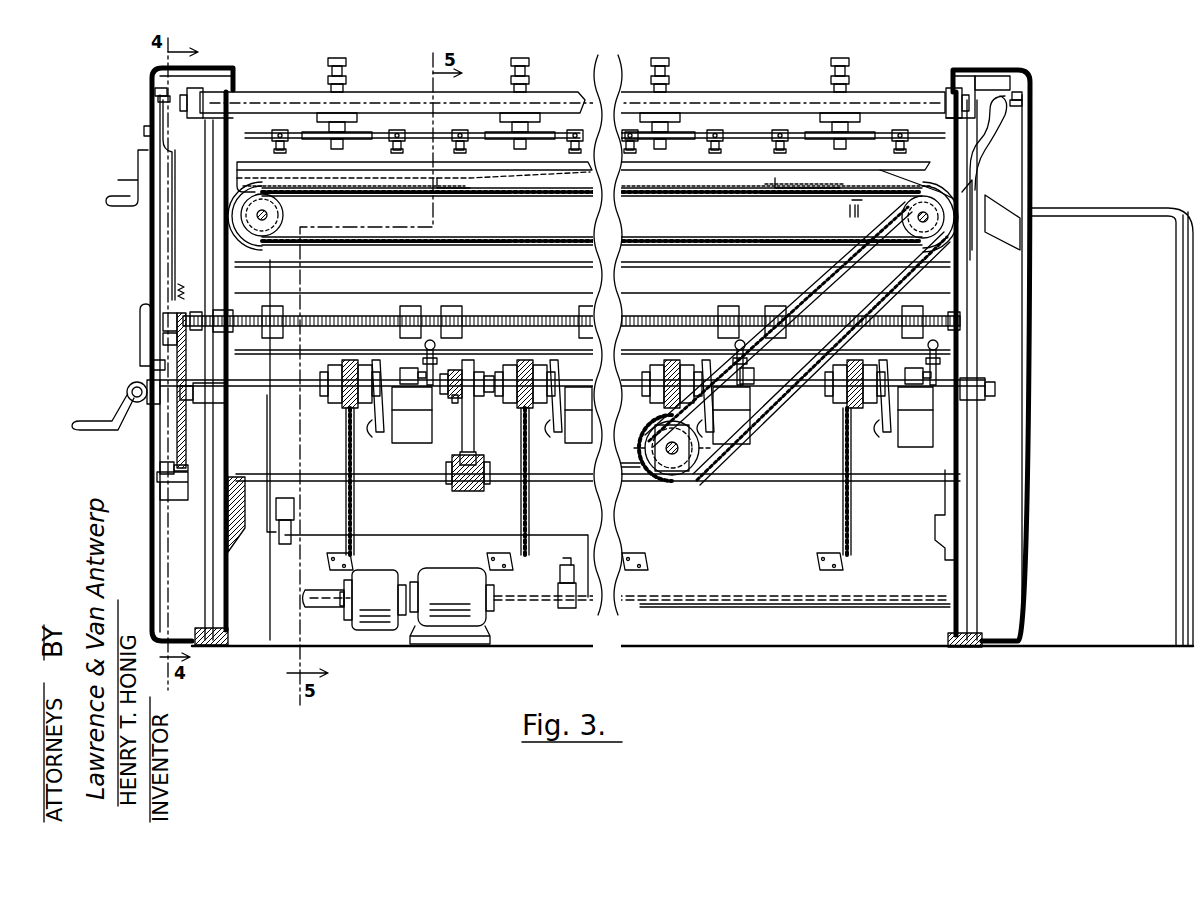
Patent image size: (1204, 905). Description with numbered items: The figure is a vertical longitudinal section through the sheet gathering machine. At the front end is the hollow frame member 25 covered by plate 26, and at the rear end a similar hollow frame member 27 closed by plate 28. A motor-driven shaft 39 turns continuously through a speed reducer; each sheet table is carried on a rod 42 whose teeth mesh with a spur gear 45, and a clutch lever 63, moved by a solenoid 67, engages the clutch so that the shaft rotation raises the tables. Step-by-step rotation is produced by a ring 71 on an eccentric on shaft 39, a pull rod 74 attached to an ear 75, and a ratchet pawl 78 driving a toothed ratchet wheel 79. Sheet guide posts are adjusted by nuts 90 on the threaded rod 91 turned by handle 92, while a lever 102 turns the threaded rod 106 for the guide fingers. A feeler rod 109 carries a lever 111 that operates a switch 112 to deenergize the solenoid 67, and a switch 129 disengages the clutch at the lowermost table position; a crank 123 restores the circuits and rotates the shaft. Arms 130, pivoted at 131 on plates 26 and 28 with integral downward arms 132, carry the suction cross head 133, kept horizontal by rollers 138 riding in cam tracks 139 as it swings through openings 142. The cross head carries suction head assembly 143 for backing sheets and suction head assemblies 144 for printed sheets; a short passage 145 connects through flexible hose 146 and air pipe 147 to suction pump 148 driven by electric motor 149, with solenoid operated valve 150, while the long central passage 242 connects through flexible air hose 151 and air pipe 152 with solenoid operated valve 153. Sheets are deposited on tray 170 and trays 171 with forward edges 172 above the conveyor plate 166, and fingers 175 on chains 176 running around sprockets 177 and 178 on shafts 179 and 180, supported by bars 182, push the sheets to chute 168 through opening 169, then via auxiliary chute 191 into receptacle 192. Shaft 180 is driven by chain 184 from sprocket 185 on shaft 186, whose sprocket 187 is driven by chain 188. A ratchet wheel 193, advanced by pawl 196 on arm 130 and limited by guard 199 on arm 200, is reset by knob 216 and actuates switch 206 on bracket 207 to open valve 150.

The hollow frame member 25 is at (152, 262).
The plate 26 is at (228, 602).
The hollow frame member 27 is at (985, 76).
The plate 28 is at (953, 571).
The shaft 39 is at (410, 482).
The rod 42 is at (352, 502).
The spur gear 45 is at (345, 362).
The clutch lever 63 is at (375, 405).
The solenoid 67 is at (410, 440).
The ring 71 is at (468, 492).
The pull rod 74 is at (468, 410).
The ear 75 is at (478, 368).
The ratchet pawl 78 is at (455, 368).
The toothed ratchet wheel 79 is at (452, 400).
The nut 90 is at (275, 308).
The rod 91 is at (335, 312).
The handle 92 is at (141, 352).
The lever 102 is at (120, 200).
The rod 106 is at (152, 128).
The rod 109 is at (993, 370).
The lever 111 is at (755, 368).
The switch 112 is at (407, 368).
The crank 123 is at (108, 415).
The switch 129 is at (495, 557).
The arm 130 is at (210, 235).
The pivot 131 is at (232, 397).
The arm 132 is at (207, 446).
The suction cross head 133 is at (478, 96).
The roller 138 is at (160, 98).
The cam track 139 is at (158, 90).
The opening 142 is at (215, 88).
The suction head assembly 143 is at (347, 100).
The suction head assembly 144 is at (528, 118).
The short passage 145 is at (287, 96).
The flexible hose 146 is at (170, 210).
The air pipe 147 is at (272, 432).
The suction pump 148 is at (372, 632).
The electric motor 149 is at (440, 615).
The solenoid operated valve 150 is at (283, 545).
The flexible air hose 151 is at (995, 155).
The air pipe 152 is at (720, 600).
The solenoid operated valve 153 is at (560, 578).
The conveyor plate 166 is at (365, 180).
The chute 168 is at (942, 185).
The opening 169 is at (958, 195).
The tray 170 is at (300, 178).
The tray 171 is at (505, 182).
The forward edge 172 is at (268, 176).
The finger 175 is at (233, 196).
The chain 176 is at (650, 240).
The sprocket 177 is at (295, 238).
The sprocket 178 is at (918, 218).
The shaft 179 is at (282, 215).
The shaft 180 is at (890, 220).
The bar 182 is at (487, 200).
The chain 184 is at (812, 290).
The sprocket 185 is at (690, 462).
The shaft 186 is at (674, 465).
The sprocket 187 is at (700, 464).
The chain 188 is at (600, 470).
The auxiliary chute 191 is at (1010, 210).
The receptacle 192 is at (1122, 356).
The ratchet wheel 193 is at (178, 445).
The ratchet pawl 196 is at (180, 300).
The guard 199 is at (170, 318).
The arm 200 is at (170, 357).
The switch 206 is at (165, 470).
The bracket 207 is at (165, 492).
The knob 216 is at (132, 390).
The long central passage 242 is at (745, 98).